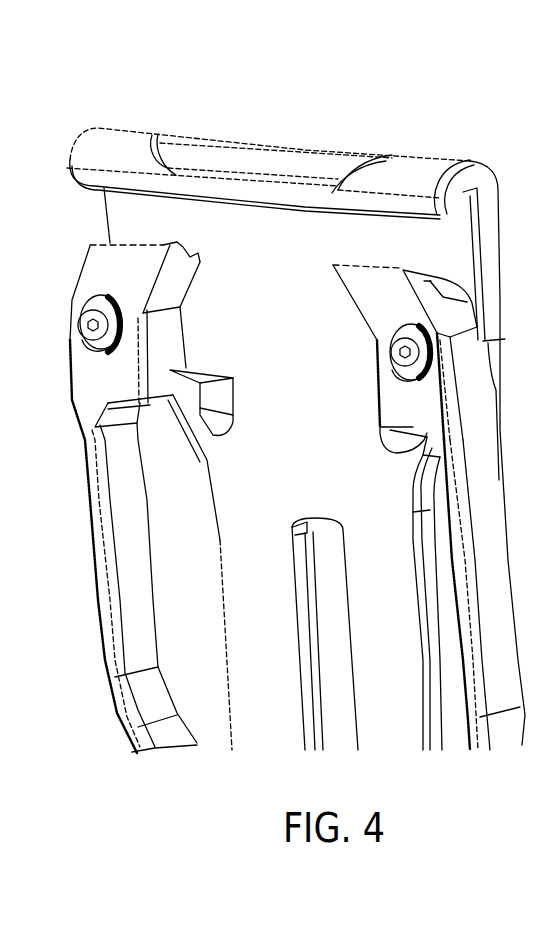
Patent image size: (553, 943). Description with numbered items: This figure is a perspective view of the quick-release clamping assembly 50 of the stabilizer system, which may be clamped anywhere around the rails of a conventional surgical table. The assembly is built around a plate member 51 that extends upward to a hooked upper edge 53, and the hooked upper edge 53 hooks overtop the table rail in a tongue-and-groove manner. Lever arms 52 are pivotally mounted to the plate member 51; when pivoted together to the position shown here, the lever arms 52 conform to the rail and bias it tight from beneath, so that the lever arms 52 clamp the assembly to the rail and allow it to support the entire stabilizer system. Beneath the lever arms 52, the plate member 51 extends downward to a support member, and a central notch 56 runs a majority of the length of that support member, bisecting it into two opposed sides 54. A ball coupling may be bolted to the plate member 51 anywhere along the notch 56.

The quick-release clamping assembly 50 is at (412, 110).
The plate member 51 is at (302, 372).
The lever arms 52 is at (507, 653).
The hooked upper edge 53 is at (440, 217).
The opposed sides 54 is at (365, 628).
The central notch 56 is at (312, 513).